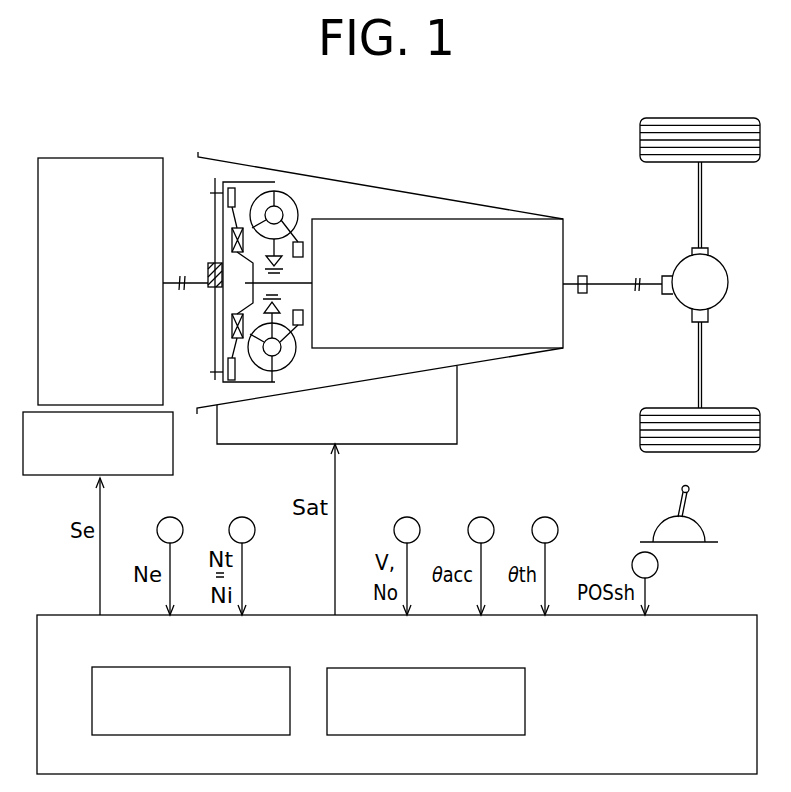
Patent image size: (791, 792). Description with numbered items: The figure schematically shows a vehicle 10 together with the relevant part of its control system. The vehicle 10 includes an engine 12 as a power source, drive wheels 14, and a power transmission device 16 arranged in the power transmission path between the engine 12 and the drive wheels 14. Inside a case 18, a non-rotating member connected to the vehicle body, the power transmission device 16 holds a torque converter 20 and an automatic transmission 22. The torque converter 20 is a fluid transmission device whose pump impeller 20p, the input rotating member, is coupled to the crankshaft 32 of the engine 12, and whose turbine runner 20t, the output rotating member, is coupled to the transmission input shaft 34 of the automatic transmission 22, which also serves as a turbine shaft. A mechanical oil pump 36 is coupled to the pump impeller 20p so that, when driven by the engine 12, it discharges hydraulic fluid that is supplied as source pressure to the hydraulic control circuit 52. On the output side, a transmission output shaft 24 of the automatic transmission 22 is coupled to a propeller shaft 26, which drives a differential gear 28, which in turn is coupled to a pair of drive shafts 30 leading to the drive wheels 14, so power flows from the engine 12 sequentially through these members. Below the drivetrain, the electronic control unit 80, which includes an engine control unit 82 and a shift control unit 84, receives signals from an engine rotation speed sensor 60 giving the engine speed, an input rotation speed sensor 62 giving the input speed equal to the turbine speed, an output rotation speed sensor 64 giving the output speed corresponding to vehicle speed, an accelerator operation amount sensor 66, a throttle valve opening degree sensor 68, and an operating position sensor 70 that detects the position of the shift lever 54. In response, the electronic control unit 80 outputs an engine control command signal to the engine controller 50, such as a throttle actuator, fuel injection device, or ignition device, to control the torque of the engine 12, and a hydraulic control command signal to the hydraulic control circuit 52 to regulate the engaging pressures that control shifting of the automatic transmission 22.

The vehicle 10 is at (556, 78).
The engine 12 is at (66, 172).
The drive wheels 14 is at (645, 140).
The power transmission device 16 is at (250, 102).
The case 18 is at (398, 187).
The torque converter 20 is at (270, 264).
The pump impeller 20p is at (284, 363).
The turbine runner 20t is at (250, 383).
The automatic transmission 22 is at (547, 243).
The transmission output shaft 24 is at (572, 293).
The propeller shaft 26 is at (602, 282).
The differential gear 28 is at (713, 270).
The drive shafts 30 is at (697, 203).
The crankshaft 32 is at (207, 272).
The transmission input shaft 34 is at (305, 326).
The mechanical oil pump 36 is at (295, 242).
The engine controller 50 is at (90, 468).
The hydraulic control circuit 52 is at (458, 404).
The shift lever 54 is at (689, 486).
The engine rotation speed sensor 60 is at (163, 522).
The input rotation speed sensor 62 is at (235, 522).
The output rotation speed sensor 64 is at (400, 522).
The accelerator operation amount sensor 66 is at (474, 522).
The throttle valve opening degree sensor 68 is at (538, 522).
The operating position sensor 70 is at (640, 557).
The electronic control unit 80 is at (700, 632).
The engine control unit 82 is at (238, 672).
The shift control unit 84 is at (473, 675).